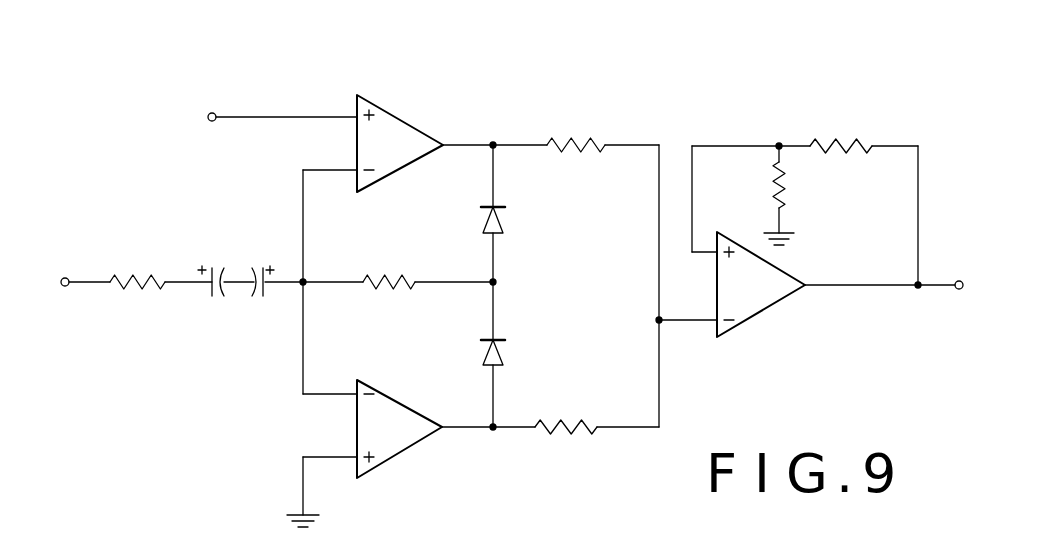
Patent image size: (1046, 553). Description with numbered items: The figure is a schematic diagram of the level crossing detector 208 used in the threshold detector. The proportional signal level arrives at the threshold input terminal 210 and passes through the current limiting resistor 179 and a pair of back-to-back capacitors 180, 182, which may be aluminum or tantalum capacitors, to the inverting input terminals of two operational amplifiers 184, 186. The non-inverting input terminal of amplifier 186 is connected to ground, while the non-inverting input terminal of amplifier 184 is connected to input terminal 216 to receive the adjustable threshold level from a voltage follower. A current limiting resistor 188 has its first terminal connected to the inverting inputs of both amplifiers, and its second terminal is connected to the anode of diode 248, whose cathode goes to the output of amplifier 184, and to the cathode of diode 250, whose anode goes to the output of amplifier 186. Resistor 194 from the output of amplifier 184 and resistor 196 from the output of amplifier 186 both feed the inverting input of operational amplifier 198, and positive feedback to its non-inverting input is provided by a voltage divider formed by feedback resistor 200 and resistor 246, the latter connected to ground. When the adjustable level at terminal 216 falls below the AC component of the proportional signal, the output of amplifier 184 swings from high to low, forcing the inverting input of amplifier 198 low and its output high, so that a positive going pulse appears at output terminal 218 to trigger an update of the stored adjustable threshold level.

The current limiting resistor 179 is at (155, 290).
The capacitor 180 is at (210, 292).
The capacitor 182 is at (268, 292).
The operational amplifier 184 is at (386, 112).
The operational amplifier 186 is at (393, 460).
The current limiting resistor 188 is at (368, 290).
The resistor 194 is at (580, 108).
The resistor 196 is at (553, 440).
The operational amplifier 198 is at (756, 313).
The feedback resistor 200 is at (830, 140).
The level crossing detector 208 is at (500, 122).
The threshold input terminal 210 is at (62, 278).
The input terminal 216 is at (228, 116).
The output terminal 218 is at (957, 292).
The resistor 246 is at (783, 208).
The diode 248 is at (503, 220).
The diode 250 is at (505, 352).